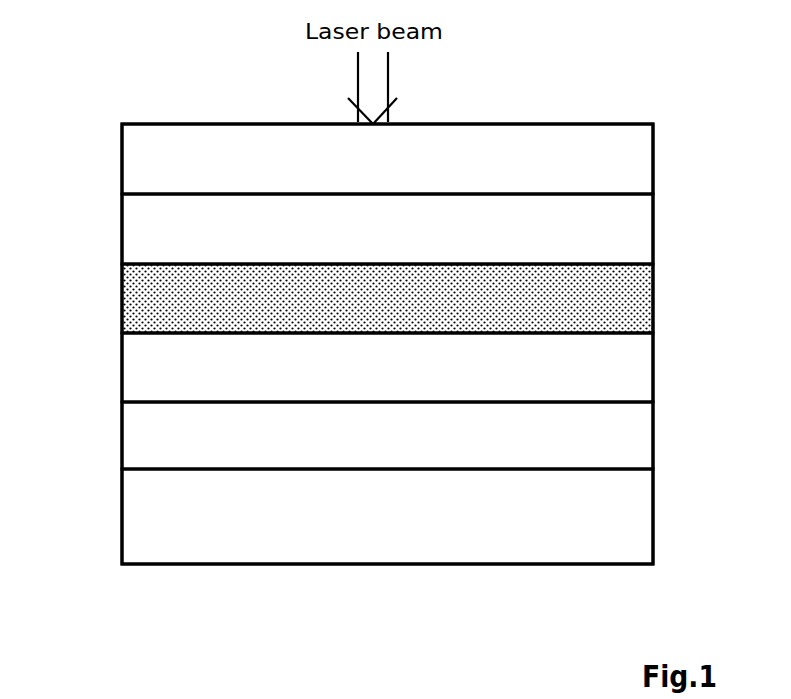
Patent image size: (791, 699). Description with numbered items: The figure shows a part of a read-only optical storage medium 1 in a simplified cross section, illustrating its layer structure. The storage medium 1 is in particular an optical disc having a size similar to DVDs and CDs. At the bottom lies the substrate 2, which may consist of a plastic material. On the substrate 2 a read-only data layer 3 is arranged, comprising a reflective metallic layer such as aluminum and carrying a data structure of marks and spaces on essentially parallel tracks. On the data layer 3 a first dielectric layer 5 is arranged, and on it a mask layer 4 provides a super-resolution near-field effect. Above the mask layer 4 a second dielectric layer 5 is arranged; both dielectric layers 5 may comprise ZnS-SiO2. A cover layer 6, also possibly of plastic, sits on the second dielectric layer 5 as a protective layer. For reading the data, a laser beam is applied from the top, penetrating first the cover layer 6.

The optical storage medium 1 is at (536, 566).
The substrate 2 is at (133, 508).
The data layer 3 is at (137, 428).
The mask layer 4 is at (162, 303).
The dielectric layer 5 is at (633, 228).
The cover layer 6 is at (157, 162).